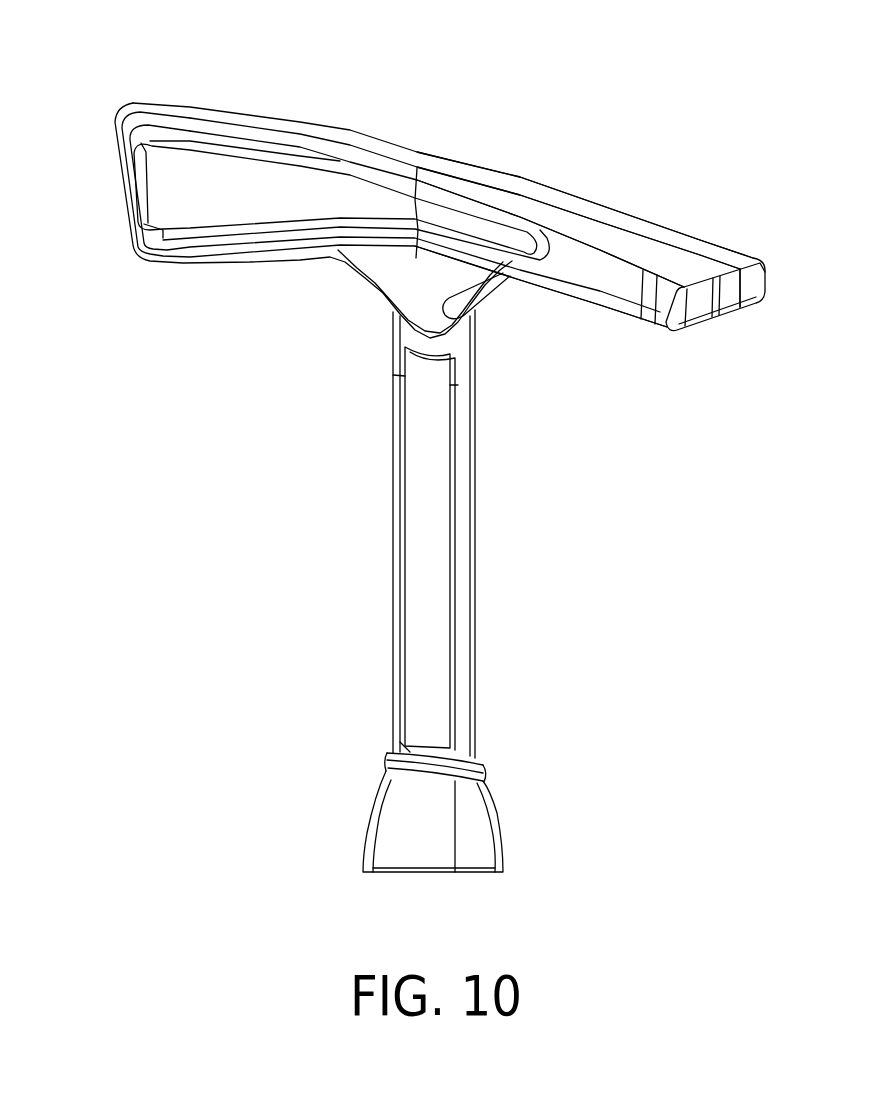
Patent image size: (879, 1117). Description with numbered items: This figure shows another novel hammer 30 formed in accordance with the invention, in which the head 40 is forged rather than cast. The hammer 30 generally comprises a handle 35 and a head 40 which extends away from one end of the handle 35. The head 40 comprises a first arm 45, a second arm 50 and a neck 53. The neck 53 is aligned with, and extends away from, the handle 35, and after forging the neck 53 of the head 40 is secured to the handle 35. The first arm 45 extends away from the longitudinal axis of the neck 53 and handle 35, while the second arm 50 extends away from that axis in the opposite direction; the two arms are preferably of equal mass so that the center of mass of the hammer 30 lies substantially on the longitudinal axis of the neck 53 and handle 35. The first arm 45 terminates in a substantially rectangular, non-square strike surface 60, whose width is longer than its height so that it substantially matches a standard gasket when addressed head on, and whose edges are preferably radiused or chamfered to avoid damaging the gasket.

The hammer 30 is at (102, 99).
The head 40 is at (450, 103).
The first arm 45 is at (663, 200).
The second arm 50 is at (217, 94).
The neck 53 is at (477, 538).
The handle 35 is at (500, 820).
The strike surface 60 is at (728, 300).